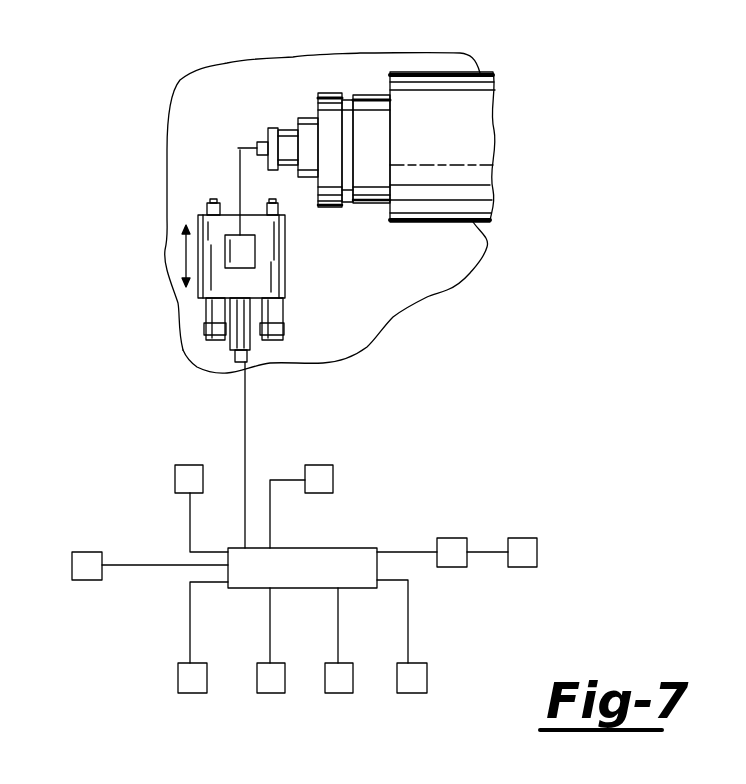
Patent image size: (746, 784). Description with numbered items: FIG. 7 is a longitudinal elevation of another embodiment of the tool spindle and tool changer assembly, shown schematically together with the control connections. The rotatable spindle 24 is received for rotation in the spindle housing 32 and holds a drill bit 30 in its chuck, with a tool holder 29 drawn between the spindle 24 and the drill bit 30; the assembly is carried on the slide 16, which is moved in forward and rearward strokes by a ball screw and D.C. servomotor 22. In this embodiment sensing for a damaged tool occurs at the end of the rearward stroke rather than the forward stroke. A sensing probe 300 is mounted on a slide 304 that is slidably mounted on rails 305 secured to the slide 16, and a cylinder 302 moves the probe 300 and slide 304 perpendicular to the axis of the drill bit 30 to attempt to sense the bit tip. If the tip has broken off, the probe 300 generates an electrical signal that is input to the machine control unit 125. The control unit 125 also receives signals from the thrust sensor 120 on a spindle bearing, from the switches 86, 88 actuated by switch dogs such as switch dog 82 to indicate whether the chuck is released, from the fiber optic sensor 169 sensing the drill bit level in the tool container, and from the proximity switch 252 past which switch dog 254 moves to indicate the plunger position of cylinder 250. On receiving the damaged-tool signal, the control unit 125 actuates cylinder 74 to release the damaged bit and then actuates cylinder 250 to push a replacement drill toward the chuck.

The slide 16 is at (518, 538).
The D.C. servomotor 22 is at (447, 538).
The rotatable spindle 24 is at (362, 100).
The tool holder 29 is at (290, 130).
The drill bit 30 is at (243, 143).
The spindle housing 32 is at (444, 143).
The cylinder 74 is at (270, 693).
The switch dog 82 is at (338, 693).
The switch 86 is at (143, 545).
The switch 88 is at (85, 552).
The thrust sensor 120 is at (192, 693).
The machine control unit 125 is at (335, 548).
The fiber optic switch or sensor 169 is at (325, 465).
The cylinder 250 is at (410, 693).
The proximity switch 252 is at (170, 484).
The switch dog 254 is at (192, 465).
The sensing probe 300 is at (240, 177).
The cylinder 302 is at (233, 347).
The slide 304 is at (278, 268).
The rails 305 is at (210, 313).